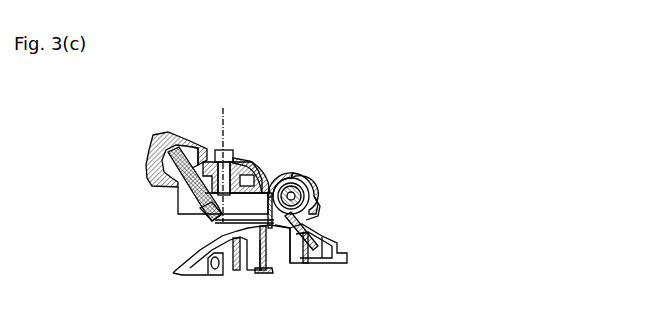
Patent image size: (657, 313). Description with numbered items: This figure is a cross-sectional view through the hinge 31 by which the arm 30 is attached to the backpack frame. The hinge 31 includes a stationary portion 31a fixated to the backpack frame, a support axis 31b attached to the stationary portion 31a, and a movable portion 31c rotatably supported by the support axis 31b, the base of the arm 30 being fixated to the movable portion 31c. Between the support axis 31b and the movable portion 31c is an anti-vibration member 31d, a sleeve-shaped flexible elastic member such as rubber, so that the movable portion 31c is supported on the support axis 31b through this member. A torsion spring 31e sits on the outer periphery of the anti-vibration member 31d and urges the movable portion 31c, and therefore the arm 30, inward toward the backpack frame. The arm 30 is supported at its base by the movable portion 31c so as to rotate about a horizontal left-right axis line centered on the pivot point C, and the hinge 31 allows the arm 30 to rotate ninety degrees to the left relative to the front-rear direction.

The arm 30 is at (184, 142).
The pivot point C is at (224, 155).
The hinge 31 is at (280, 151).
The stationary portion 31a is at (312, 252).
The support axis 31b is at (302, 170).
The movable portion 31c is at (258, 170).
The anti-vibration member 31d is at (300, 188).
The torsion spring 31e is at (318, 207).